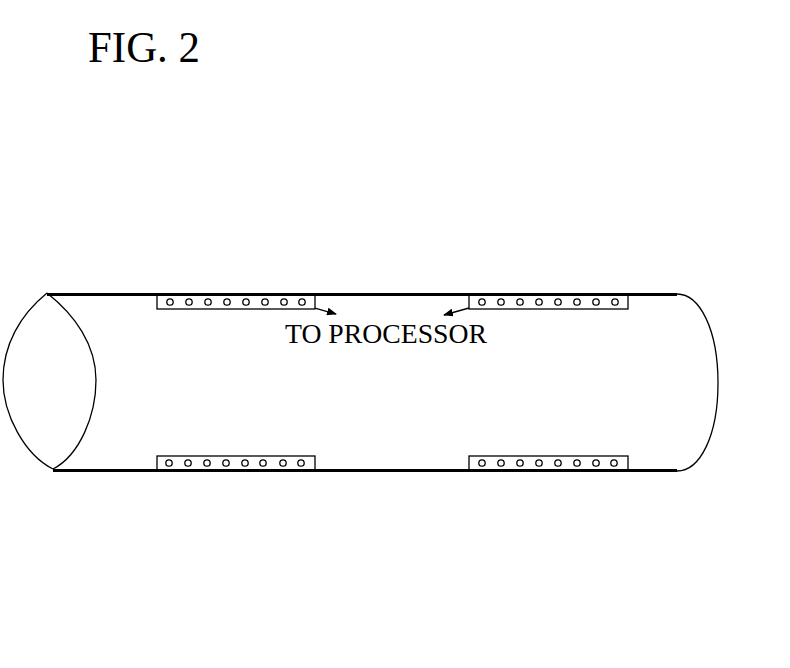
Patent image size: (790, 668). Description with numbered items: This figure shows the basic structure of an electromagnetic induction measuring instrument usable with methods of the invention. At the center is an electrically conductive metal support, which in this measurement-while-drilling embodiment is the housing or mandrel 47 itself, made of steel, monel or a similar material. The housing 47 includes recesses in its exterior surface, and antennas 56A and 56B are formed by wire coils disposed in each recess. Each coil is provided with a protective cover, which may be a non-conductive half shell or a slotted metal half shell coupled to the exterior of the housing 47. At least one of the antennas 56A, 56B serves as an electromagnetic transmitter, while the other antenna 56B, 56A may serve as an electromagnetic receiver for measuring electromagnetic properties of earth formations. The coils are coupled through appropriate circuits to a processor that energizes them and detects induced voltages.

The housing 47 is at (392, 472).
The antenna 56A is at (488, 272).
The antenna 56B is at (195, 277).